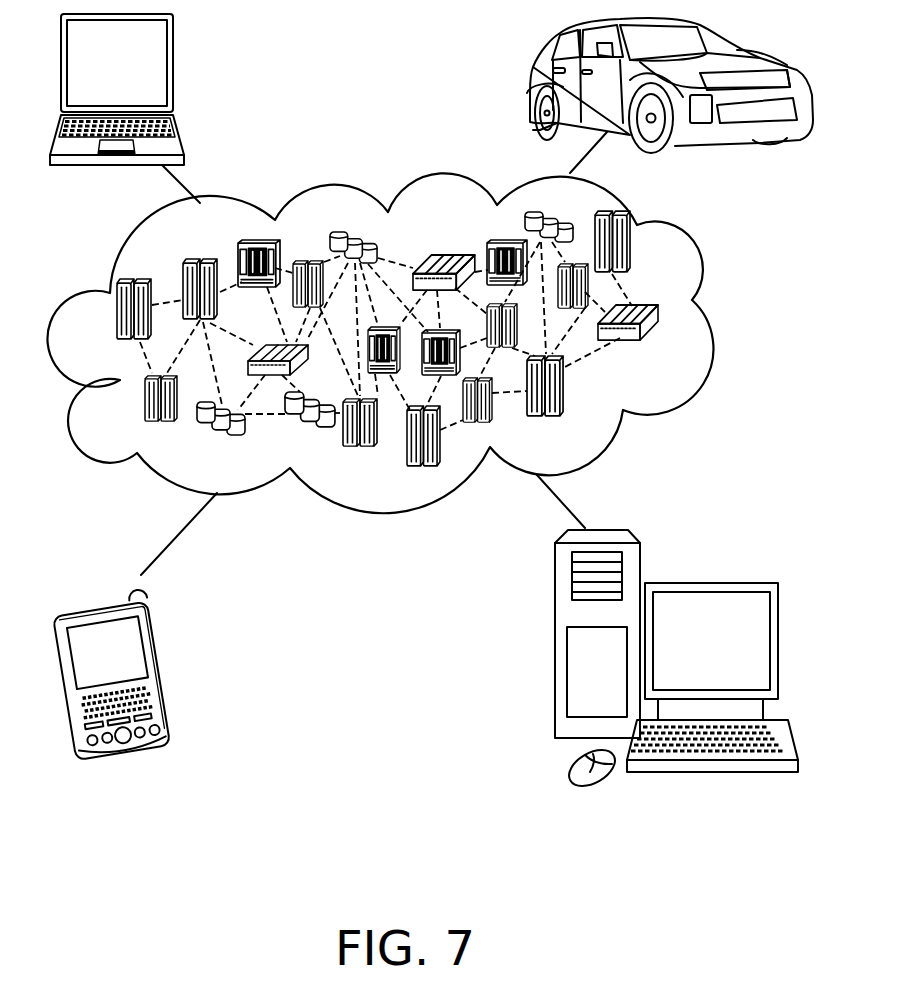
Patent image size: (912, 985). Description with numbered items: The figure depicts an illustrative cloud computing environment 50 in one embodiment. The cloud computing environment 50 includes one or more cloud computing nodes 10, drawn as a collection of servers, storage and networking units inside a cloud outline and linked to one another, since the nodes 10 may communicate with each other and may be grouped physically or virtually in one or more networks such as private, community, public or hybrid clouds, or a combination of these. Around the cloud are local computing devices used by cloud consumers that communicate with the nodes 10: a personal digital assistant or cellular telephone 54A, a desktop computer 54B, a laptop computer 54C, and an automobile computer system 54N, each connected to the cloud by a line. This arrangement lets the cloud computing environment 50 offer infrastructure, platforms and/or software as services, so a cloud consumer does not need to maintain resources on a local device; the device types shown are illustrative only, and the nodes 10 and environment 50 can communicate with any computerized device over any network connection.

The cloud computing nodes 10 is at (668, 352).
The cloud computing environment 50 is at (710, 320).
The personal digital assistant (PDA) or cellular telephone 54A is at (167, 669).
The desktop computer 54B is at (710, 583).
The laptop computer 54C is at (173, 71).
The automobile computer system 54N is at (533, 81).